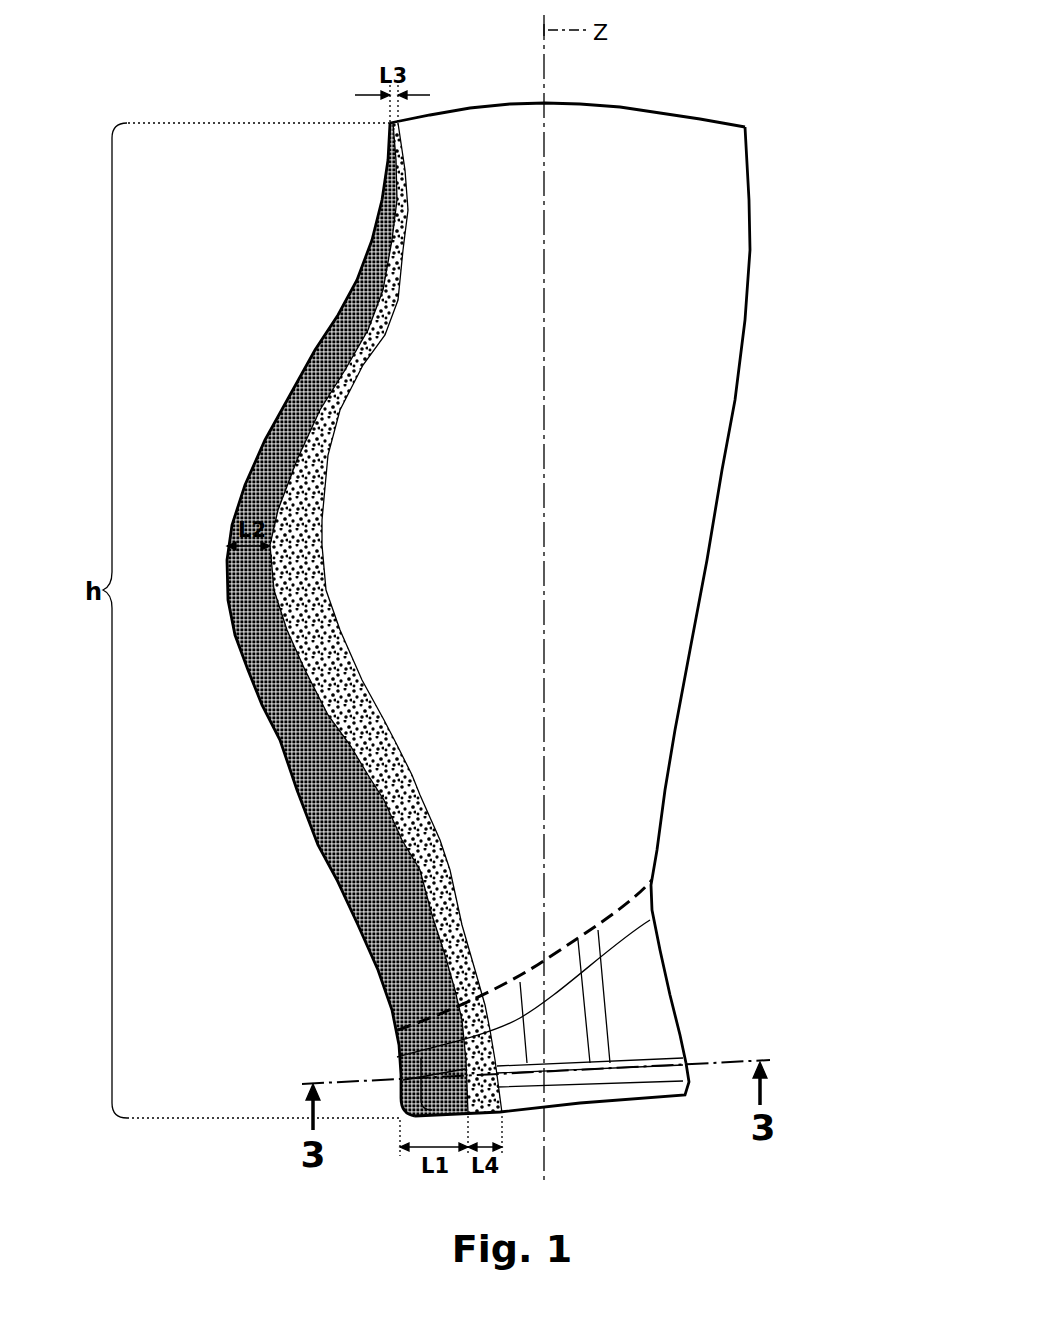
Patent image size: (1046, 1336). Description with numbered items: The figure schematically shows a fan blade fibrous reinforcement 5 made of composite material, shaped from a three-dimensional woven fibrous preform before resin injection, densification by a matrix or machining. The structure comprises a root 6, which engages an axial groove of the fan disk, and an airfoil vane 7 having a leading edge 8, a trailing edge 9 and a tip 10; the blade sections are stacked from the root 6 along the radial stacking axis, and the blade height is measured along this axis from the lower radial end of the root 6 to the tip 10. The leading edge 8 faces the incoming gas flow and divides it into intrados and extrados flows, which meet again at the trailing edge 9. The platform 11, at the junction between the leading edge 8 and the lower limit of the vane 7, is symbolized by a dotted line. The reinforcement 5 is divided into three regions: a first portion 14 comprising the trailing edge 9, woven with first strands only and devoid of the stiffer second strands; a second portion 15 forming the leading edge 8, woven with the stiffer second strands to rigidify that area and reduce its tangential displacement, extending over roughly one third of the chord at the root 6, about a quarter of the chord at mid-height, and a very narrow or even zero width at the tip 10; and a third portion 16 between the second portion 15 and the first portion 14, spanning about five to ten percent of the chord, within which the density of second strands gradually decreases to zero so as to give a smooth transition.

The fibrous reinforcement 5 is at (518, 585).
The root 6 is at (633, 1097).
The airfoil vane 7 is at (518, 571).
The leading edge 8 is at (270, 408).
The trailing edge 9 is at (762, 254).
The tip 10 is at (686, 108).
The platform 11 is at (624, 928).
The first portion 14 is at (616, 544).
The second portion 15 is at (298, 739).
The third portion 16 is at (390, 787).